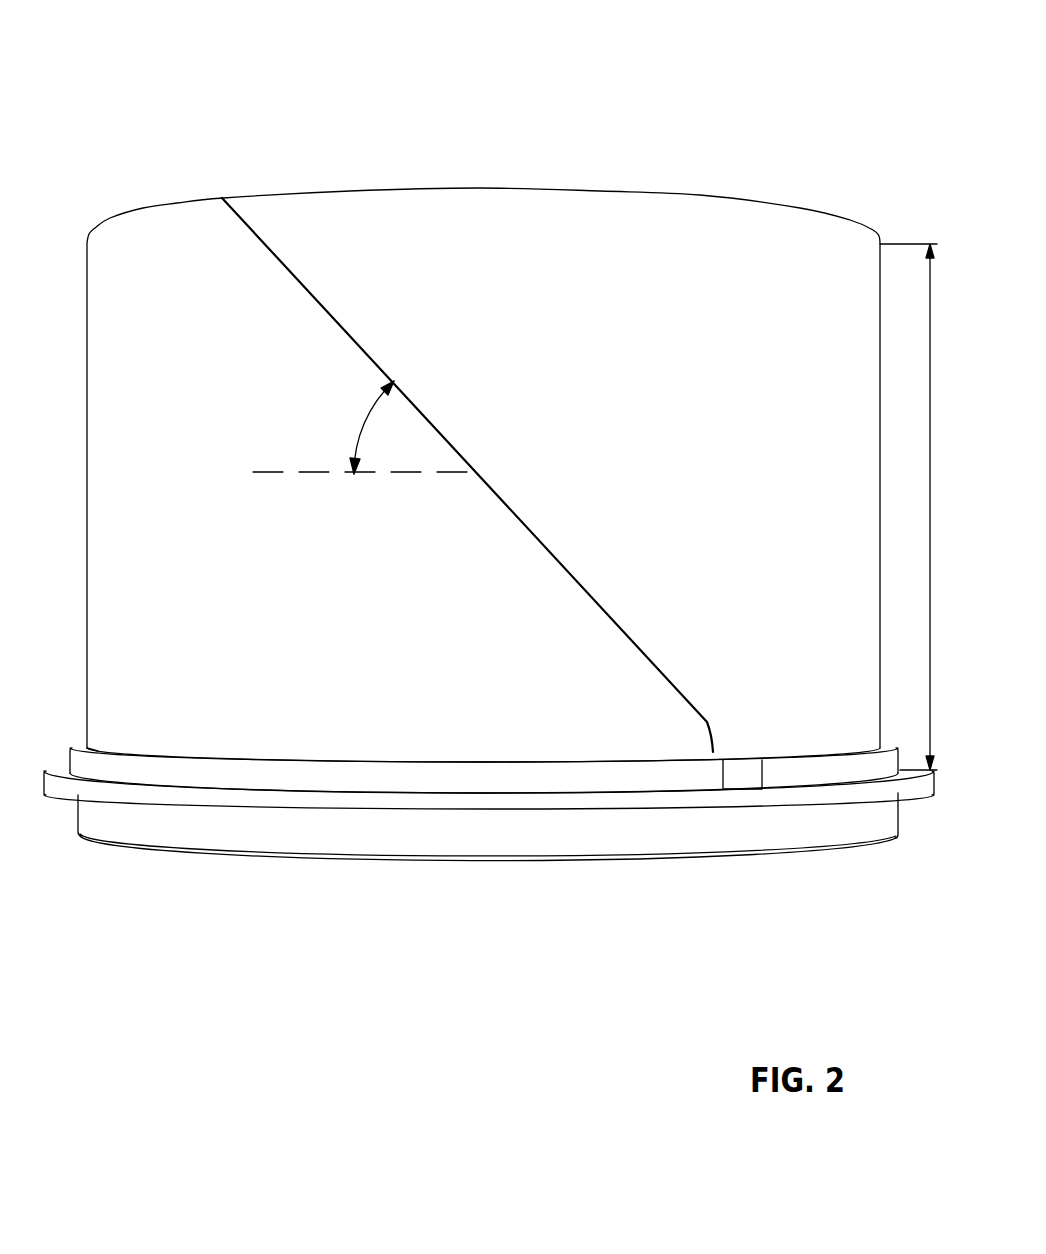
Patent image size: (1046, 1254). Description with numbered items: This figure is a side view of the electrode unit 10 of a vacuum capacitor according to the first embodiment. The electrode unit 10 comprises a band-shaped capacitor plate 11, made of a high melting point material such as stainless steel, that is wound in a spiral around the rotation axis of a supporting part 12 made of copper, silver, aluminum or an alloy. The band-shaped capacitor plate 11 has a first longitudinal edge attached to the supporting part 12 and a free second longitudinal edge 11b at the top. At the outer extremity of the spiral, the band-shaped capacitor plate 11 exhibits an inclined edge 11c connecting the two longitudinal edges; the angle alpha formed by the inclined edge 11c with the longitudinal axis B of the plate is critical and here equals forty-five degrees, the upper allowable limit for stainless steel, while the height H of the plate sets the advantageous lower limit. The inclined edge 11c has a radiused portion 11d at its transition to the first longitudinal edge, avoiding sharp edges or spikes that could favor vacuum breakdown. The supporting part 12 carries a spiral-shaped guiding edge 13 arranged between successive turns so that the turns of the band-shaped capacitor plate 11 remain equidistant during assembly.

The electrode unit 10 is at (764, 88).
The band-shaped capacitor plate 11 is at (520, 214).
The second longitudinal edge 11b is at (802, 208).
The inclined edge 11c is at (355, 347).
The radiused portion 11d is at (713, 753).
The supporting part 12 is at (872, 822).
The spiral-shaped guiding edge 13 is at (405, 780).